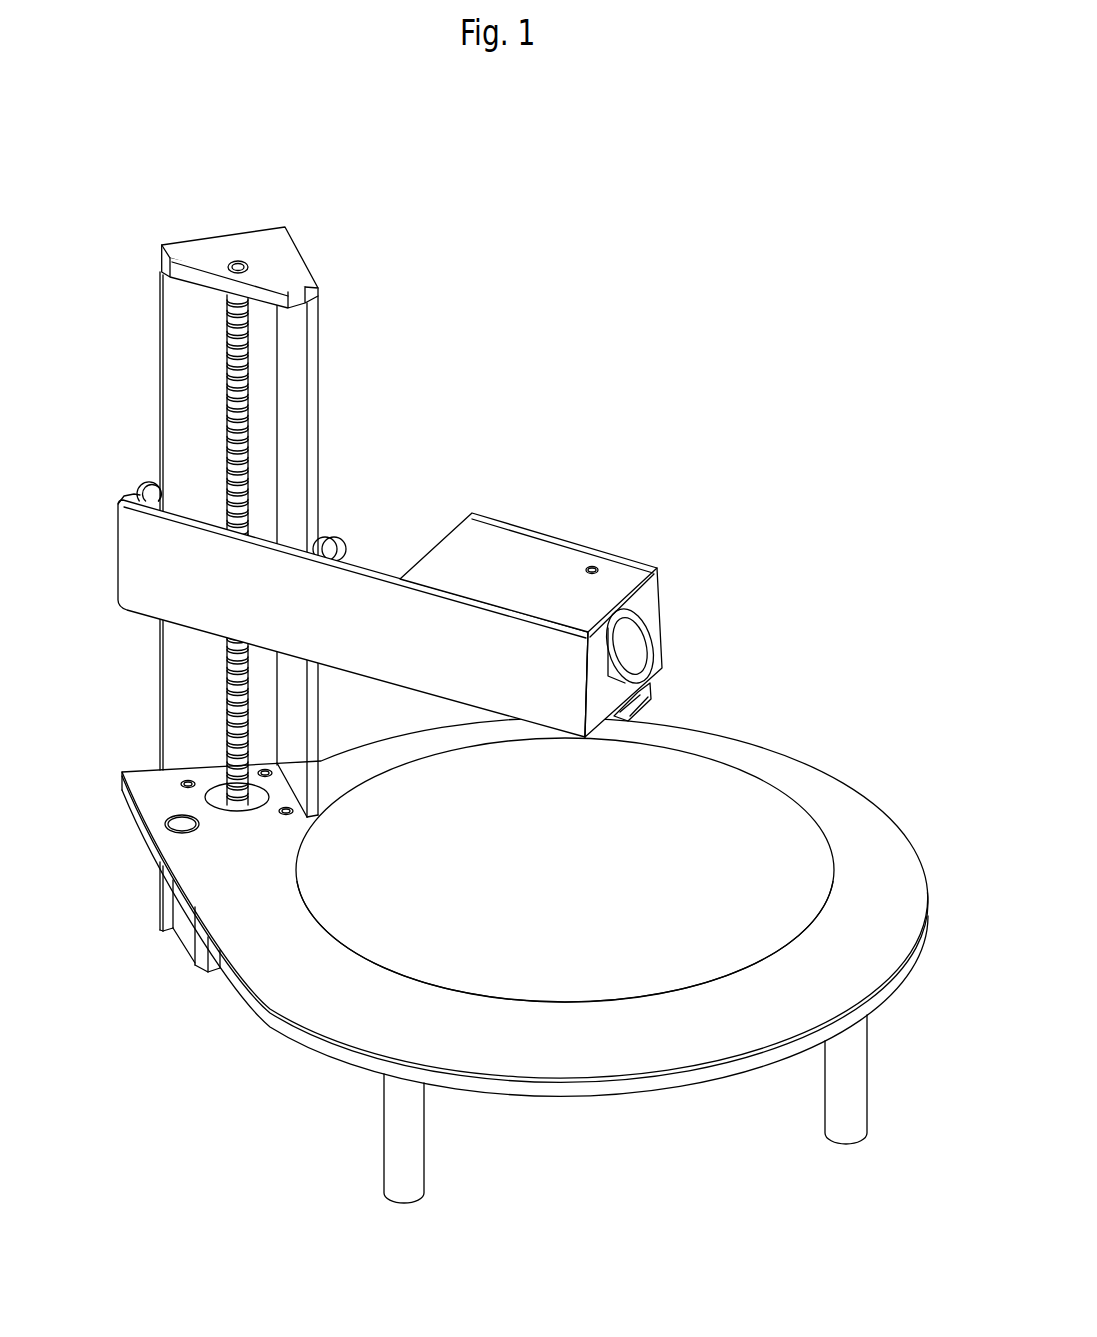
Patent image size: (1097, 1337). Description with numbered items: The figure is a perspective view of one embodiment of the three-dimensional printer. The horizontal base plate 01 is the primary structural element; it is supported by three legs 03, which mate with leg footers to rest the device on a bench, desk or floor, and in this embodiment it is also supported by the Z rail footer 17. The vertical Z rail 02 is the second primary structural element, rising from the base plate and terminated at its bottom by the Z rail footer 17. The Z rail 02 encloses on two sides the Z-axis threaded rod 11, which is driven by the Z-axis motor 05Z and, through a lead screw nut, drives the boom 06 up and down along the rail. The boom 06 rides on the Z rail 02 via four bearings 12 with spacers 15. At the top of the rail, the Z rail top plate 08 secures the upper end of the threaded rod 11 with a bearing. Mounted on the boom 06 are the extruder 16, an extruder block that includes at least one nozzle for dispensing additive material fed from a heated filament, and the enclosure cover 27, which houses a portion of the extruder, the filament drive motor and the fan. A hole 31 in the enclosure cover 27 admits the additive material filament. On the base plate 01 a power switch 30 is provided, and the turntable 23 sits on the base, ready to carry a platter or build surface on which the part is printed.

The base plate 01 is at (602, 1058).
The Z rail 02 is at (313, 393).
The legs 03 is at (402, 1143).
The Z-axis motor 05Z is at (188, 930).
The boom 06 is at (385, 648).
The Z rail top plate 08 is at (262, 255).
The Z-axis threaded rod 11 is at (237, 692).
The bearings 12 is at (131, 493).
The spacers 15 is at (152, 482).
The extruder 16 is at (647, 703).
The Z rail footer 17 is at (162, 915).
The turntable 23 is at (600, 868).
The enclosure cover 27 is at (510, 545).
The power switch 30 is at (180, 827).
The hole 31 is at (598, 568).